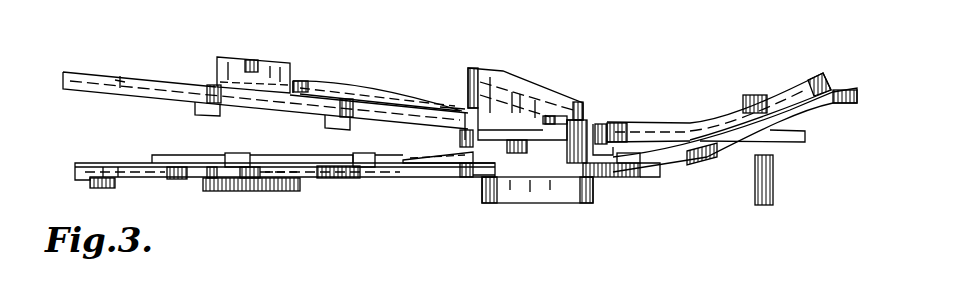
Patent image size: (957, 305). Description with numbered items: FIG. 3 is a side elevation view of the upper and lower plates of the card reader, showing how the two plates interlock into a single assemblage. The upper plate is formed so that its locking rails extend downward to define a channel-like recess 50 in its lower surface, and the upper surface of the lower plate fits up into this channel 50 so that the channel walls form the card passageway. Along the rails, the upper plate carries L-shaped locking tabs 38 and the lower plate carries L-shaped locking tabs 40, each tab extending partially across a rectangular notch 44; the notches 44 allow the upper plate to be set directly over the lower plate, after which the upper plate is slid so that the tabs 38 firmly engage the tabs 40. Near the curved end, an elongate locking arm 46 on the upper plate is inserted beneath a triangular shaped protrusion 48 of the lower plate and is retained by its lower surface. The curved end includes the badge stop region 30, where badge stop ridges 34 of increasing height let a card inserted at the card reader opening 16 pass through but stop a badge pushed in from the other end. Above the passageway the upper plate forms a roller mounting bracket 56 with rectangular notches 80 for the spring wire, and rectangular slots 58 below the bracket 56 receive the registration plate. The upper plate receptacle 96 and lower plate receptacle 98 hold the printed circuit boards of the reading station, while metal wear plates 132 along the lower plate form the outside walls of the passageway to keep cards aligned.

The card reader opening 16 is at (836, 80).
The badge stop region 30 is at (396, 88).
The badge stop ridges 34 is at (418, 165).
The upper plate locking tabs 38 is at (205, 116).
The lower plate locking tabs 40 is at (235, 155).
The rectangular notches 44 is at (240, 103).
The locking arm 46 is at (793, 143).
The triangular shaped protrusion 48 is at (824, 126).
The channel-like recess 50 is at (112, 88).
The roller mounting bracket 56 is at (529, 86).
The rectangular slots 58 is at (550, 138).
The rectangular notches 80 is at (554, 118).
The upper plate receptacle 96 is at (269, 58).
The lower plate receptacle 98 is at (289, 193).
The wear plates 132 is at (170, 152).